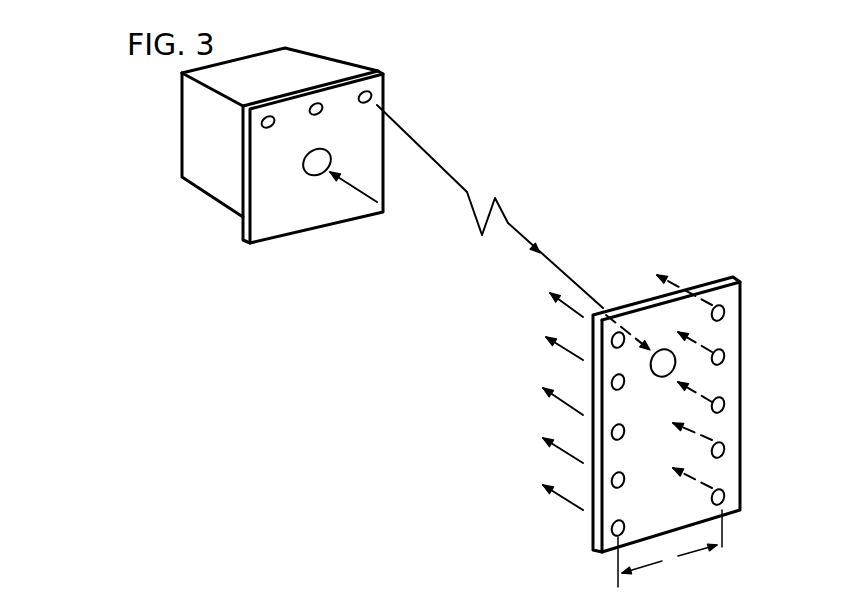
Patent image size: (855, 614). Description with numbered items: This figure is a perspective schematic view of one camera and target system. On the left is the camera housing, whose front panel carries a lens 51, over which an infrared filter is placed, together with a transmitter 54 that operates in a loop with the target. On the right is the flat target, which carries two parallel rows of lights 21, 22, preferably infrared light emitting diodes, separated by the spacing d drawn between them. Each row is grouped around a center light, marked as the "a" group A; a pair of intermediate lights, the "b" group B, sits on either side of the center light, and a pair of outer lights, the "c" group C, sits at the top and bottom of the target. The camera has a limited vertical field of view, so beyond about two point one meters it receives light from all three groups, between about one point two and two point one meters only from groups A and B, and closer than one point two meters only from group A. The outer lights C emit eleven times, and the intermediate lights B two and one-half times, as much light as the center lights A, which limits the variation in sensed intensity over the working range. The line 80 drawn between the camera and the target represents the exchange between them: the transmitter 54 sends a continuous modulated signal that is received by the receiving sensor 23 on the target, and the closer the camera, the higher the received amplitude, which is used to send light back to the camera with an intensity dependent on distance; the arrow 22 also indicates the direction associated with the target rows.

The row of lights 21 is at (608, 563).
The row of lights 22 is at (773, 552).
The receiving sensor 23 is at (663, 358).
The lens 51 is at (308, 170).
The transmitter 54 is at (270, 123).
The light beam 80 is at (416, 97).
The "a" group of lights A is at (743, 397).
The "b" group of lights B is at (743, 354).
The "c" group of lights C is at (743, 304).
The hole spacing dimension d is at (670, 548).